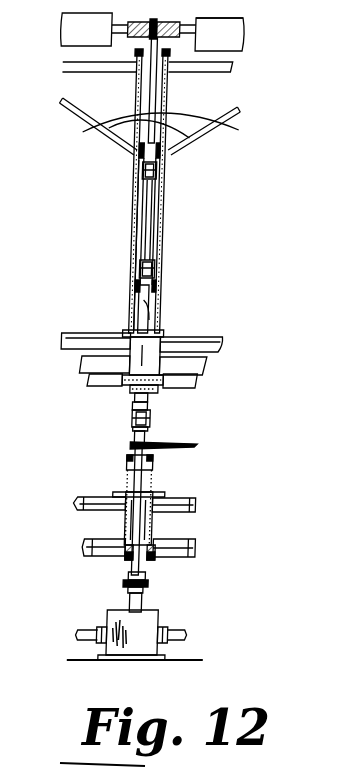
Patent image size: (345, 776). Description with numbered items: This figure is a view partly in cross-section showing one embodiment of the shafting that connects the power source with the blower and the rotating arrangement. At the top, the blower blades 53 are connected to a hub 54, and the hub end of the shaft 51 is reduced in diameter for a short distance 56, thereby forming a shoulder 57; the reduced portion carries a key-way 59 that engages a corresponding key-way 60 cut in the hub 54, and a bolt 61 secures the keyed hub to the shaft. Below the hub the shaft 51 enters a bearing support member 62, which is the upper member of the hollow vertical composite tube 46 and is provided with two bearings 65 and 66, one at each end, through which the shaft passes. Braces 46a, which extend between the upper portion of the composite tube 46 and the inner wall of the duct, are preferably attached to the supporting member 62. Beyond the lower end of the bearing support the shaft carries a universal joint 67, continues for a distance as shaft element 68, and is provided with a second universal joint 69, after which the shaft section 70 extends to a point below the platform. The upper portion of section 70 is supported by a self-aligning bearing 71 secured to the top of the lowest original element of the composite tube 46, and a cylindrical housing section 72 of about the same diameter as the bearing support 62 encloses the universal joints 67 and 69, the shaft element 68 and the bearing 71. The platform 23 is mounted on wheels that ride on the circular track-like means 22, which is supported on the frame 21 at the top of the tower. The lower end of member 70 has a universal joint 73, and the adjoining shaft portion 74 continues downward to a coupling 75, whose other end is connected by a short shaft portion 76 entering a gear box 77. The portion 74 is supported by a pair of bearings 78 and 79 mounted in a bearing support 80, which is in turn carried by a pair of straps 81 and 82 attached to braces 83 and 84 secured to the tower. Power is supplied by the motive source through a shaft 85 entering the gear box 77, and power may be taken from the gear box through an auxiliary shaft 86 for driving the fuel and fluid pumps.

The frame 21 is at (203, 384).
The circular track-like means 22 is at (216, 366).
The platform 23 is at (222, 340).
The hollow vertical composite tube 46 is at (129, 292).
The braces 46a is at (196, 138).
The shaft 51 is at (158, 432).
The blades 53 is at (225, 37).
The hub 54 is at (244, 22).
The reduced diameter portion 56 is at (175, 37).
The shoulder 57 is at (139, 62).
The key-way 59 is at (62, 20).
The key-way 60 is at (126, 35).
The bolt 61 is at (157, 21).
The bearing support member 62 is at (169, 106).
The bearing 65 is at (153, 39).
The bearing 66 is at (137, 150).
The universal joint 67 is at (164, 170).
The shaft element 68 is at (155, 212).
The second universal joint 69 is at (163, 262).
The shaft section 70 is at (155, 300).
The self-aligning bearing 71 is at (138, 283).
The cylindrical housing section 72 is at (138, 205).
The universal joint 73 is at (152, 414).
The shaft portion 74 is at (140, 432).
The coupling 75 is at (150, 582).
The short shaft portion 76 is at (142, 601).
The gear box 77 is at (157, 620).
The bearing 78 is at (128, 455).
The bearing 79 is at (128, 556).
The bearing support 80 is at (153, 518).
The strap 81 is at (160, 506).
The strap 82 is at (125, 540).
The brace 83 is at (82, 498).
The brace 84 is at (196, 551).
The shaft 85 is at (95, 630).
The auxiliary shaft 86 is at (187, 631).